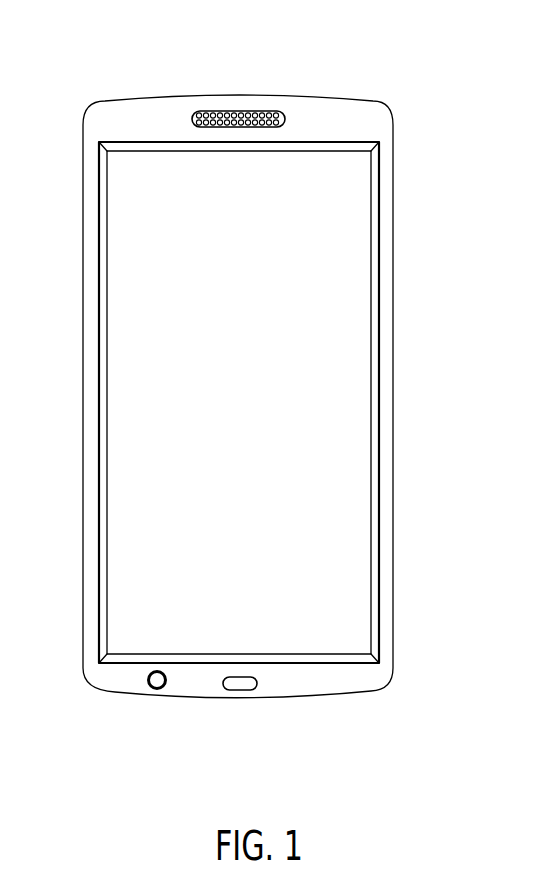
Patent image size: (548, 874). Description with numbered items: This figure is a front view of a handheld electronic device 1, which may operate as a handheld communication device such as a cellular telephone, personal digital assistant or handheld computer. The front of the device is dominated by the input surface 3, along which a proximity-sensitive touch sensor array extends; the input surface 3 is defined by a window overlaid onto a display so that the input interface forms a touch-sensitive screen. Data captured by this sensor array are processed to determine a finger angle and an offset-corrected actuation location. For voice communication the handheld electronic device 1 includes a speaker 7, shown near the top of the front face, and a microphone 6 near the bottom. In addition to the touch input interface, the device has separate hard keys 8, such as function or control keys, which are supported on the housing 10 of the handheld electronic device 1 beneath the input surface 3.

The handheld electronic device 1 is at (93, 81).
The input surface 3 is at (360, 195).
The microphone 6 is at (240, 690).
The speaker 7 is at (240, 110).
The hard keys 8 is at (157, 691).
The housing 10 is at (328, 678).